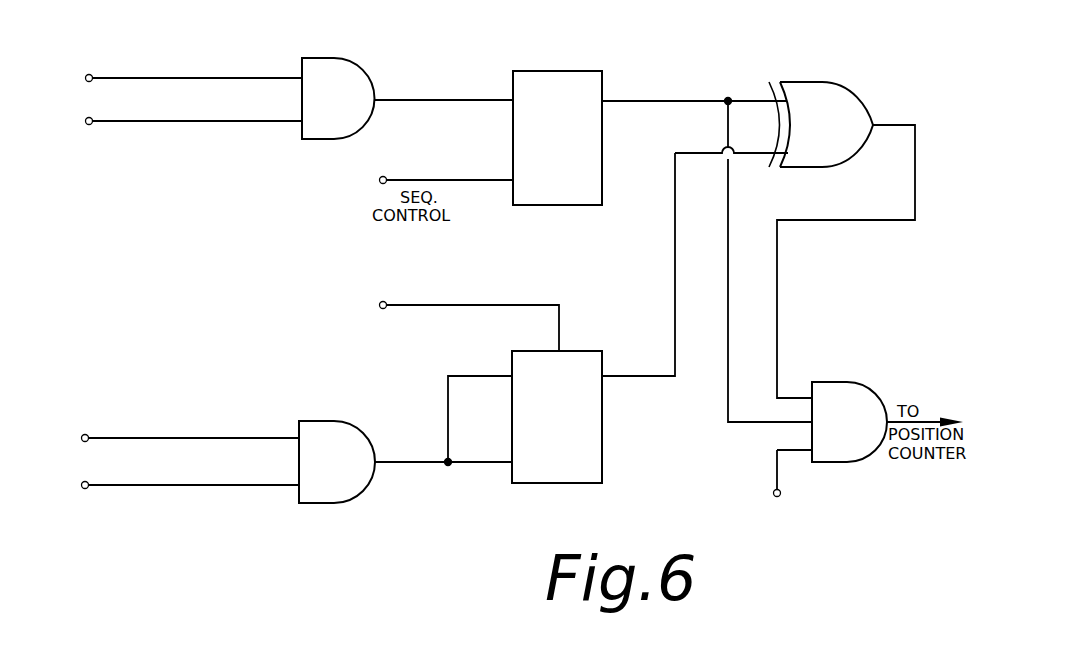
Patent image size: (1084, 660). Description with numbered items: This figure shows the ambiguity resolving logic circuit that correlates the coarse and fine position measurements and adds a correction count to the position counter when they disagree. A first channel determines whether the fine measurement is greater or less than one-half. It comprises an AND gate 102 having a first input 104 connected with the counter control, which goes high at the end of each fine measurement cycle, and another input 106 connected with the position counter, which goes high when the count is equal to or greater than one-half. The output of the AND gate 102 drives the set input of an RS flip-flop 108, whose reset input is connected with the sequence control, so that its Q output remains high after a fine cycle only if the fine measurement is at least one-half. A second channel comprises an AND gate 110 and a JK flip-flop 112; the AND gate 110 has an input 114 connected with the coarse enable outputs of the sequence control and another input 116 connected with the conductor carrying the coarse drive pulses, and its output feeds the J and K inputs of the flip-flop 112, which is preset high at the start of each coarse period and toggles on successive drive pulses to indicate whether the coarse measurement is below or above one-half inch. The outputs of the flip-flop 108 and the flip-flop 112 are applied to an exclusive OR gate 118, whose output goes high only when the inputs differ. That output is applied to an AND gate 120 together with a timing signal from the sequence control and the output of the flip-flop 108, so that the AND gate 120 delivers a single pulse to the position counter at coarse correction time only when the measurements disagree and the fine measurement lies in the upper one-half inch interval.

The AND gate 102 is at (337, 80).
The first input 104 is at (270, 123).
The another input 106 is at (252, 78).
The RS flip-flop 108 is at (596, 78).
The AND gate 110 is at (337, 432).
The JK flip-flop 112 is at (592, 461).
The input 114 is at (237, 485).
The another input 116 is at (213, 438).
The exclusive OR gate 118 is at (818, 92).
The AND gate 120 is at (846, 392).